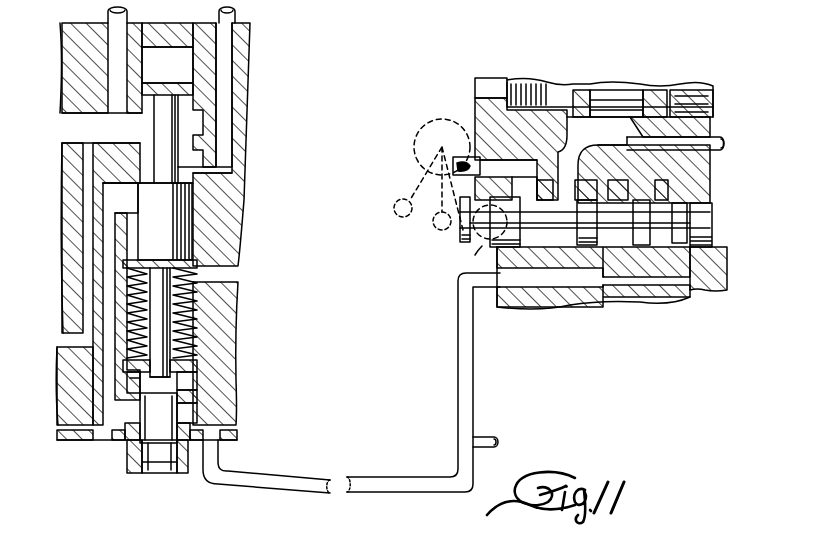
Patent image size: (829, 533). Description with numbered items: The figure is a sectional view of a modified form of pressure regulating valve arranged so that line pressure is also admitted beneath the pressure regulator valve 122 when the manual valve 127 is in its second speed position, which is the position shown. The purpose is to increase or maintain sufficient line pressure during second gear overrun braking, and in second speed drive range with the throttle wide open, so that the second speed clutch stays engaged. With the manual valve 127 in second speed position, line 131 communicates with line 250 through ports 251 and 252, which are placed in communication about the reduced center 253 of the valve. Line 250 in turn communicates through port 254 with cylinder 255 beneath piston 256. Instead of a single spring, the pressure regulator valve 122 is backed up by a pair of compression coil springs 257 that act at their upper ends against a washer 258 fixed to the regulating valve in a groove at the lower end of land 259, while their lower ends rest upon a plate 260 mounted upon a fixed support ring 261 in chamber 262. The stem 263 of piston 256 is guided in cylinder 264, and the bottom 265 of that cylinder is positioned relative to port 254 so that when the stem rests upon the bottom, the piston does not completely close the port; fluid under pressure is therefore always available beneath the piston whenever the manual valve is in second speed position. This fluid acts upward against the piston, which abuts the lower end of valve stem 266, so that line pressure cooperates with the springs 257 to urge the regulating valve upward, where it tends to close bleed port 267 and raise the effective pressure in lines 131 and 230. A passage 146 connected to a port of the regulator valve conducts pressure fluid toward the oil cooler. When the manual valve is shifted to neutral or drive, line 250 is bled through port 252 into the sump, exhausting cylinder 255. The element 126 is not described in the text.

The pressure regulator valve 122 is at (186, 129).
The cylinder head 126 is at (640, 90).
The manual valve 127 is at (716, 222).
The line 131 is at (108, 12).
The passage 146 is at (236, 20).
The line 230 is at (458, 163).
The line 250 is at (347, 476).
The port 251 is at (592, 186).
The port 252 is at (712, 263).
The reduced center 253 is at (642, 250).
The port 254 is at (190, 412).
The cylinder 255 is at (181, 397).
The piston 256 is at (140, 384).
The compression coil springs 257 is at (140, 281).
The washer 258 is at (192, 262).
The land 259 is at (185, 194).
The plate 260 is at (120, 364).
The fixed support ring 261 is at (190, 368).
The chamber 262 is at (194, 311).
The stem 263 is at (148, 437).
The cylinder 264 is at (173, 474).
The bottom 265 is at (140, 473).
The valve stem 266 is at (152, 330).
The bleed port 267 is at (130, 200).